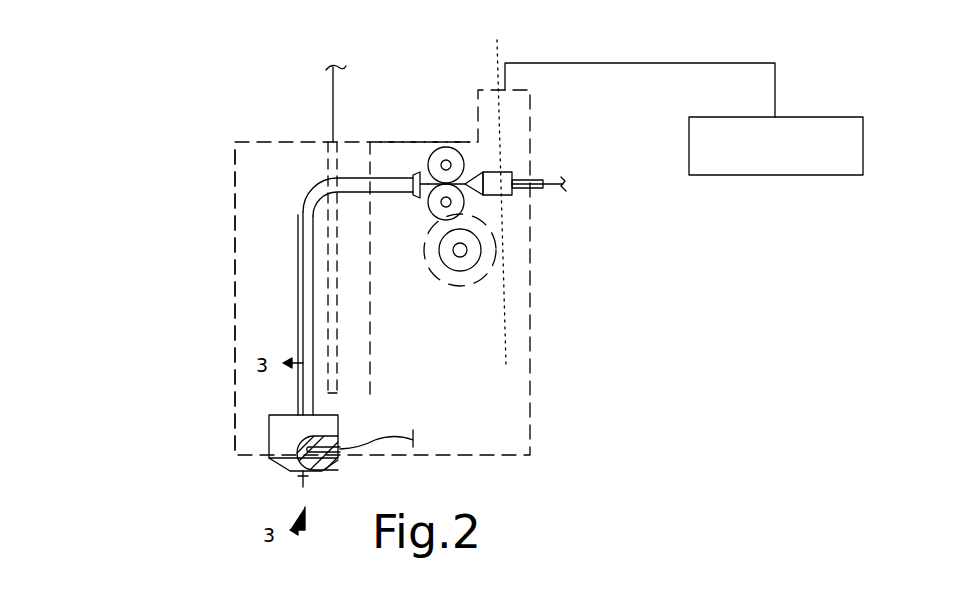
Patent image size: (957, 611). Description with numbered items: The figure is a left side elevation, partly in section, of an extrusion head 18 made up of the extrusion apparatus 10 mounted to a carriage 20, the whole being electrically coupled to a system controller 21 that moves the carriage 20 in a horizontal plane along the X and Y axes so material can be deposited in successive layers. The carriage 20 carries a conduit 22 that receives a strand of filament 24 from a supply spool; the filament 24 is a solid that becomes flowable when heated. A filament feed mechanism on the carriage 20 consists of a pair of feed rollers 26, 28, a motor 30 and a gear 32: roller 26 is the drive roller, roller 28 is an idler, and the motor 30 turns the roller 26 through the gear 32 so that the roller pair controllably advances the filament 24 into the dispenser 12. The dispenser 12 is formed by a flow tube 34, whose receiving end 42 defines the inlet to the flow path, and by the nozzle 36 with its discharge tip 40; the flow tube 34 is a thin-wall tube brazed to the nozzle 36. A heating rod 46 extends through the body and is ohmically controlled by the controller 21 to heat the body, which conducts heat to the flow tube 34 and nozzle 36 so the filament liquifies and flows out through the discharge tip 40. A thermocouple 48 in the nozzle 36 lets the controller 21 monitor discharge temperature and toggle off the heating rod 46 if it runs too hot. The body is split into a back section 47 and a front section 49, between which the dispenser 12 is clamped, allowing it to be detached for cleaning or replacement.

The extrusion apparatus 10 is at (238, 140).
The dispenser 12 is at (355, 183).
The extrusion head 18 is at (136, 132).
The carriage 20 is at (408, 141).
The system controller 21 is at (813, 117).
The conduit 22 is at (502, 173).
The filament 24 is at (560, 186).
The feed roller 26 is at (460, 202).
The feed roller 28 is at (450, 153).
The motor 30 is at (472, 255).
The gear 32 is at (468, 282).
The flow tube 34 is at (303, 242).
The nozzle 36 is at (282, 425).
The discharge tip 40 is at (322, 472).
The receiving end 42 is at (418, 190).
The heating rod 46 is at (333, 293).
The back section 47 is at (360, 373).
The thermocouple 48 is at (340, 447).
The front section 49 is at (247, 243).